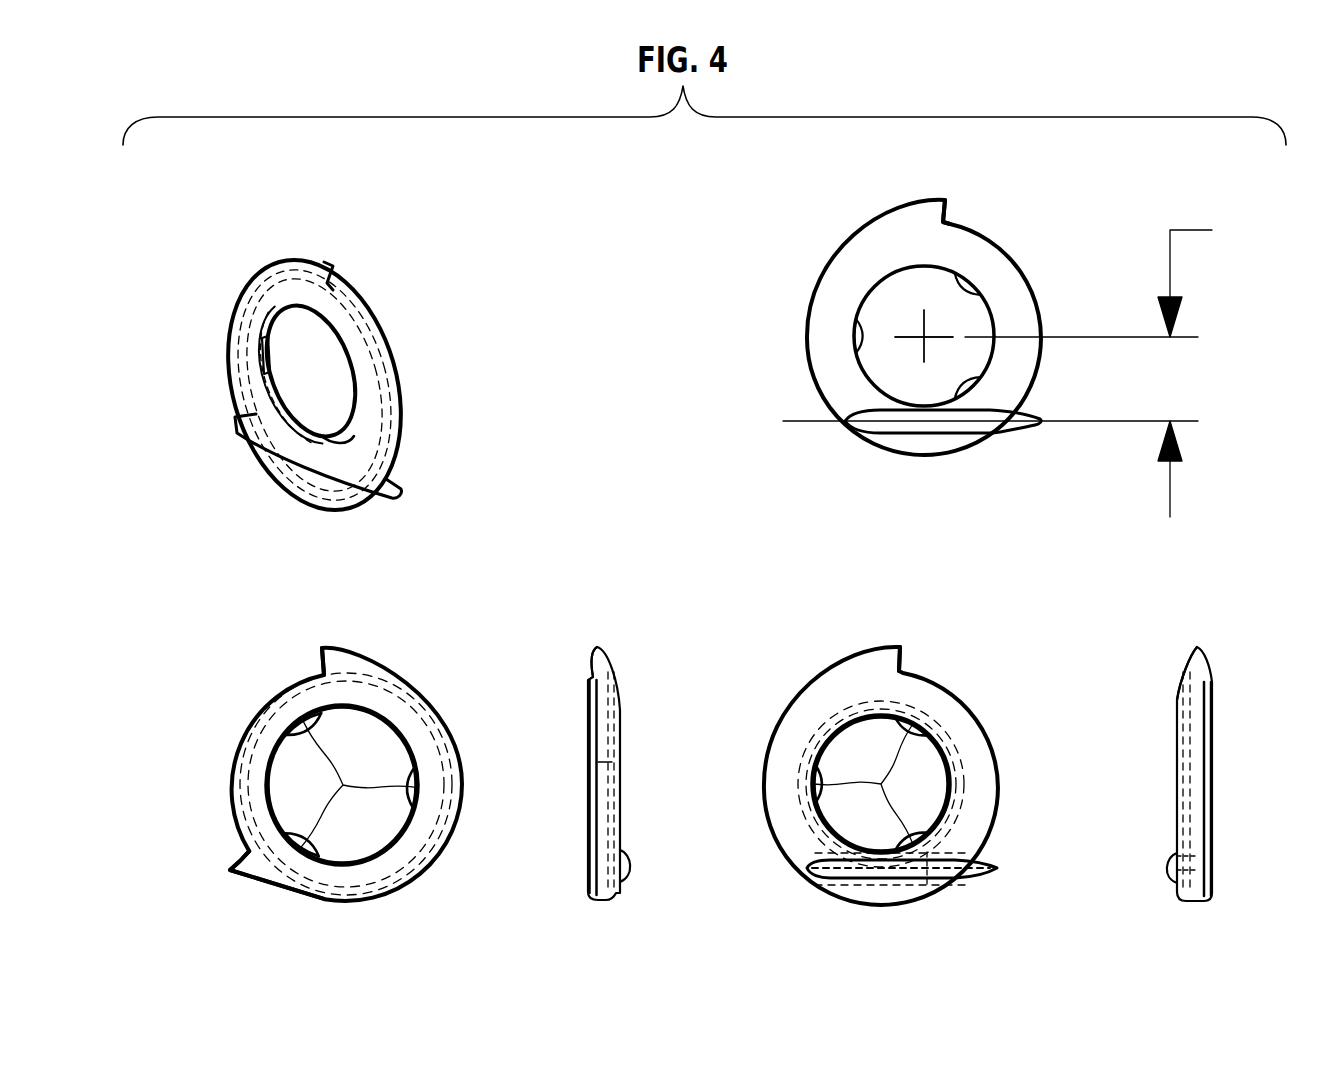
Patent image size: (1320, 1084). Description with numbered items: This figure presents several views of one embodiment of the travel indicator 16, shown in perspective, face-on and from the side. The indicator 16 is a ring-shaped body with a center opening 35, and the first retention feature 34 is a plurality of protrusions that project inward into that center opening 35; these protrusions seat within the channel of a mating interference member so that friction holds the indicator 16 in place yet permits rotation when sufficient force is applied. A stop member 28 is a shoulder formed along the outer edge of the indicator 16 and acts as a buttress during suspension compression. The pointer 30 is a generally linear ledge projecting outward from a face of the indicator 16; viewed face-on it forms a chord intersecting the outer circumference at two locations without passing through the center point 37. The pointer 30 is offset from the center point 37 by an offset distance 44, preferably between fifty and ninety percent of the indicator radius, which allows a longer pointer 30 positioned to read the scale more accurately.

The indicator 16 is at (209, 266).
The stop member 28 is at (334, 276).
The pointer 30 is at (366, 498).
The first retention feature 34 is at (253, 352).
The center opening 35 is at (308, 368).
The center point 37 is at (921, 333).
The offset distance 44 is at (1010, 366).